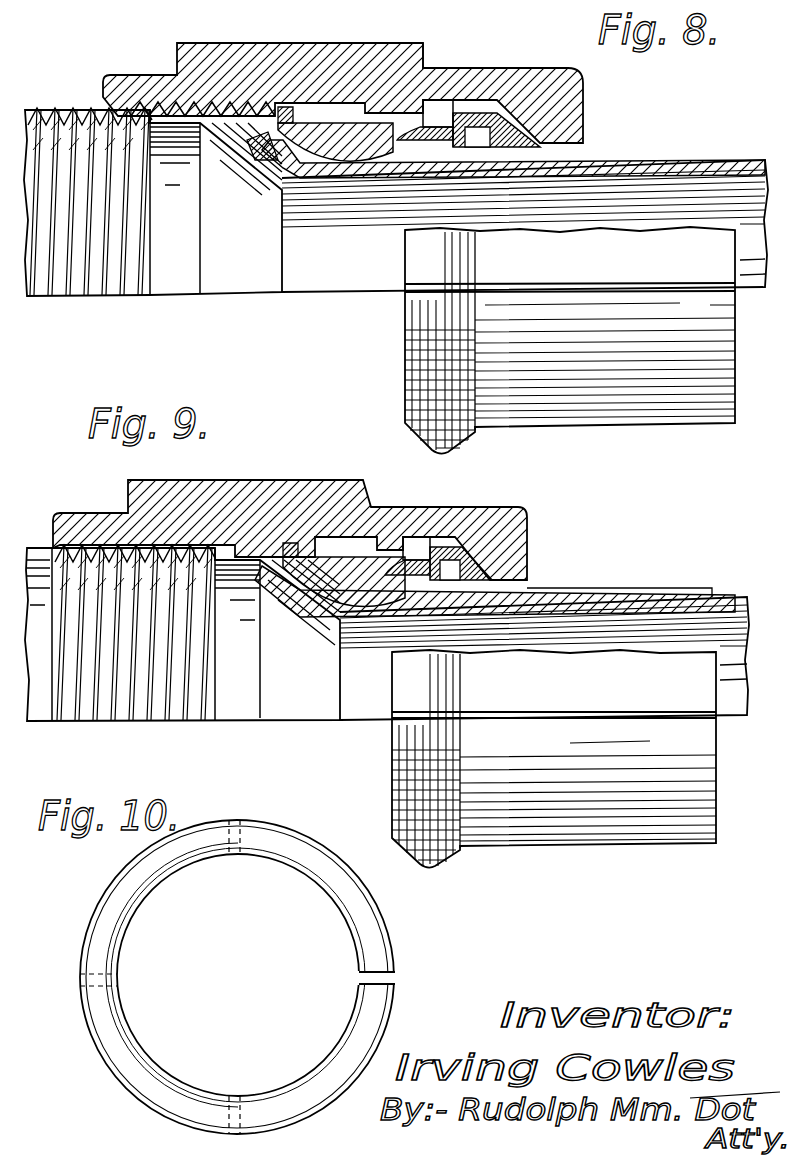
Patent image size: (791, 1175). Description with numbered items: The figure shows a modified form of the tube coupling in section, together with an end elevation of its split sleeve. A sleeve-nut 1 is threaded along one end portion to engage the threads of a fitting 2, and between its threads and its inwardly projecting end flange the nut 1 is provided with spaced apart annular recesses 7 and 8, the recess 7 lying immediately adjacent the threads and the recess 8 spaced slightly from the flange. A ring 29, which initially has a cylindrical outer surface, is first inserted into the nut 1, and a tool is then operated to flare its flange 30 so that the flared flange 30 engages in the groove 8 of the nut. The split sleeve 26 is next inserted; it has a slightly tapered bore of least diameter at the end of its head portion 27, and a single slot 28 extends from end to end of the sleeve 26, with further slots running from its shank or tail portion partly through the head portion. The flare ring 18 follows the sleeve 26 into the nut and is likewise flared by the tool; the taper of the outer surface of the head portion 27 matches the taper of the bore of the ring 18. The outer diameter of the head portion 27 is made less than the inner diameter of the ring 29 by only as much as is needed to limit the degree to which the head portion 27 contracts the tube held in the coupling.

In FIG. 8, the sleeve-nut 1 is at (322, 60).
In FIG. 9, the sleeve-nut 1 is at (226, 490).
In FIG. 8, the fitting 2 is at (190, 278).
In FIG. 9, the fitting 2 is at (118, 712).
In FIG. 8, the annular recess 7 is at (292, 105).
In FIG. 8, the annular recess 8 is at (424, 66).
In FIG. 8, the ring 18 is at (338, 153).
In FIG. 8, the split sleeve 26 is at (565, 252).
In FIG. 9, the split sleeve 26 is at (682, 762).
In FIG. 10, the split sleeve 26 is at (104, 1080).
In FIG. 8, the head portion 27 is at (432, 242).
In FIG. 9, the head portion 27 is at (410, 583).
In FIG. 8, the slot 28 is at (422, 290).
In FIG. 10, the slot 28 is at (393, 978).
In FIG. 8, the ring 29 is at (490, 120).
In FIG. 9, the ring 29 is at (452, 560).
In FIG. 8, the flared flange 30 is at (440, 100).
In FIG. 9, the flared flange 30 is at (420, 560).